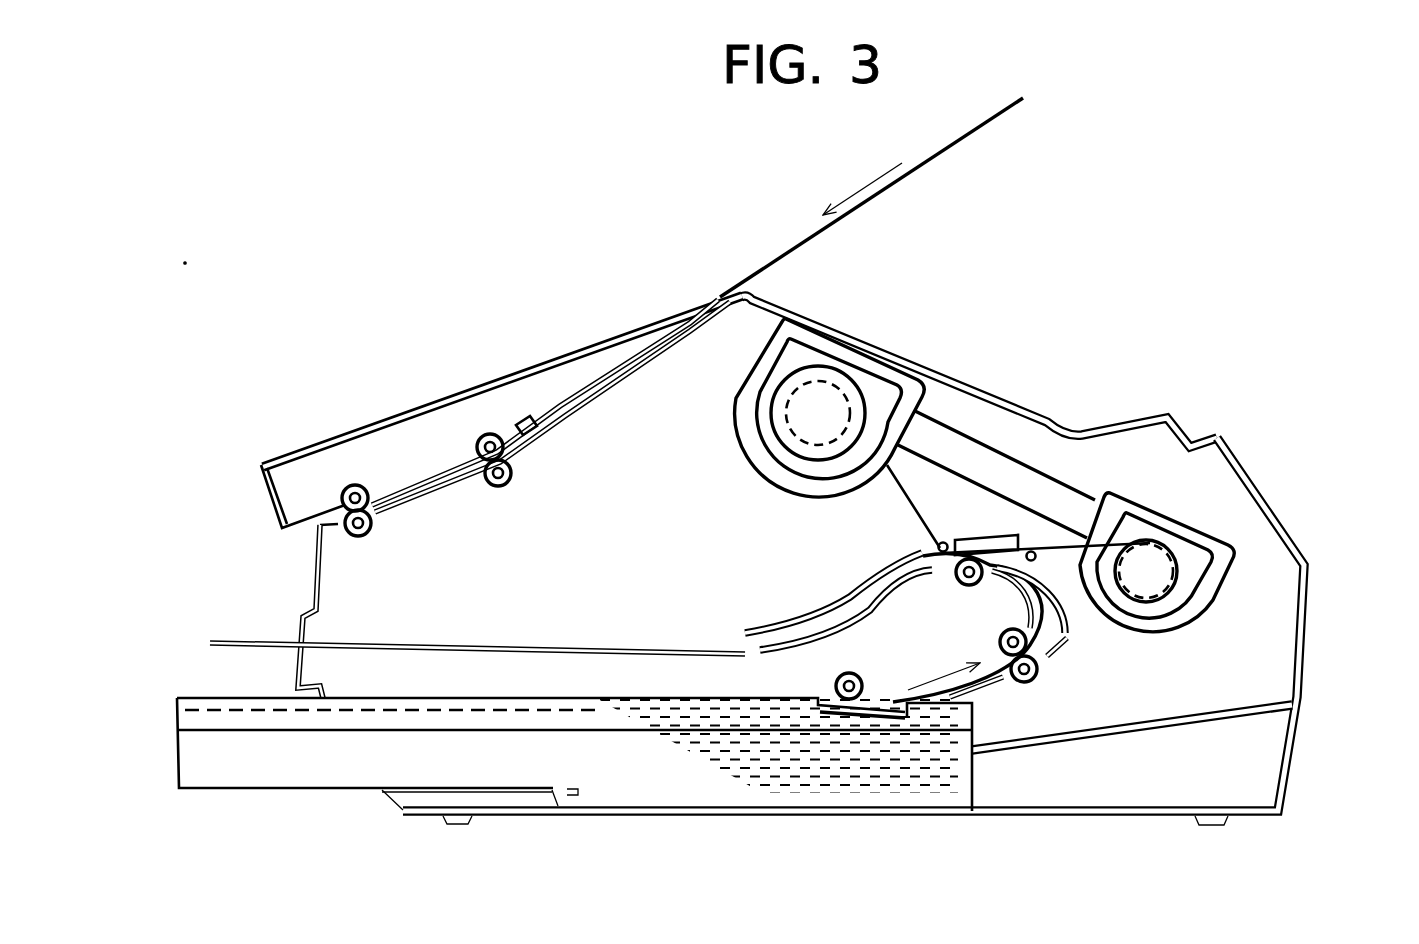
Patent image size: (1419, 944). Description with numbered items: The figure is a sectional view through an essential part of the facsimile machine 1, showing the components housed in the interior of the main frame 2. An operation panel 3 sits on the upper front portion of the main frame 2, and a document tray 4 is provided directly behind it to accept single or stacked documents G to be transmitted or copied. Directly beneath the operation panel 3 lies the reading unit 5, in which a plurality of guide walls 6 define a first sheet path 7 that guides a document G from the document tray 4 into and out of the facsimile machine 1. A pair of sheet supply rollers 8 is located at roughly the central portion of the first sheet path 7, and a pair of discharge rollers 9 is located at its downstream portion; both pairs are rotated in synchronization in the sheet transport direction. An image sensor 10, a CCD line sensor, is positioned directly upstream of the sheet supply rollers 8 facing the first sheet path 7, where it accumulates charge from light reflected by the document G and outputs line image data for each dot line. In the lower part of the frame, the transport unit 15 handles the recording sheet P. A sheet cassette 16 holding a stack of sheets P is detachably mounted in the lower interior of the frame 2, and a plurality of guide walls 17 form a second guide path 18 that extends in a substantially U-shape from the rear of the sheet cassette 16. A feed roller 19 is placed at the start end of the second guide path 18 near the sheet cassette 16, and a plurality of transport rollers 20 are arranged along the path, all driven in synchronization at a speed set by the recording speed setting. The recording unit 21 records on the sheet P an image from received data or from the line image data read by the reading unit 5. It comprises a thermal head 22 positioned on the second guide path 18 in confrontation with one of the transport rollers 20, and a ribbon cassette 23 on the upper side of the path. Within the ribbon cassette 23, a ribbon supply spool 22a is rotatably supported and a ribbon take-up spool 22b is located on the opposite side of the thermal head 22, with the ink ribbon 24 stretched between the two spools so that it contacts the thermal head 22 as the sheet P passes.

The facsimile machine 1 is at (975, 348).
The main frame 2 is at (1265, 483).
The operation panel 3 is at (502, 377).
The document tray 4 is at (783, 262).
The reading unit 5 is at (410, 405).
The guide walls 6 is at (443, 462).
The first sheet path 7 is at (597, 403).
The sheet supply rollers 8 is at (516, 480).
The discharge rollers 9 is at (375, 520).
The image sensor 10 is at (528, 422).
The transport unit 15 is at (993, 707).
The sheet cassette 16 is at (288, 772).
The guide walls 17 is at (810, 615).
The second guide path 18 is at (1053, 640).
The feed roller 19 is at (838, 682).
The transport rollers 20 is at (977, 583).
The recording unit 21 is at (887, 540).
The thermal head 22 is at (990, 541).
The ribbon supply spool 22a is at (1180, 560).
The ribbon take-up spool 22b is at (797, 435).
The ribbon cassette 23 is at (1005, 450).
The ink ribbon 24 is at (888, 468).
The document G is at (917, 180).
The sheet P is at (938, 683).